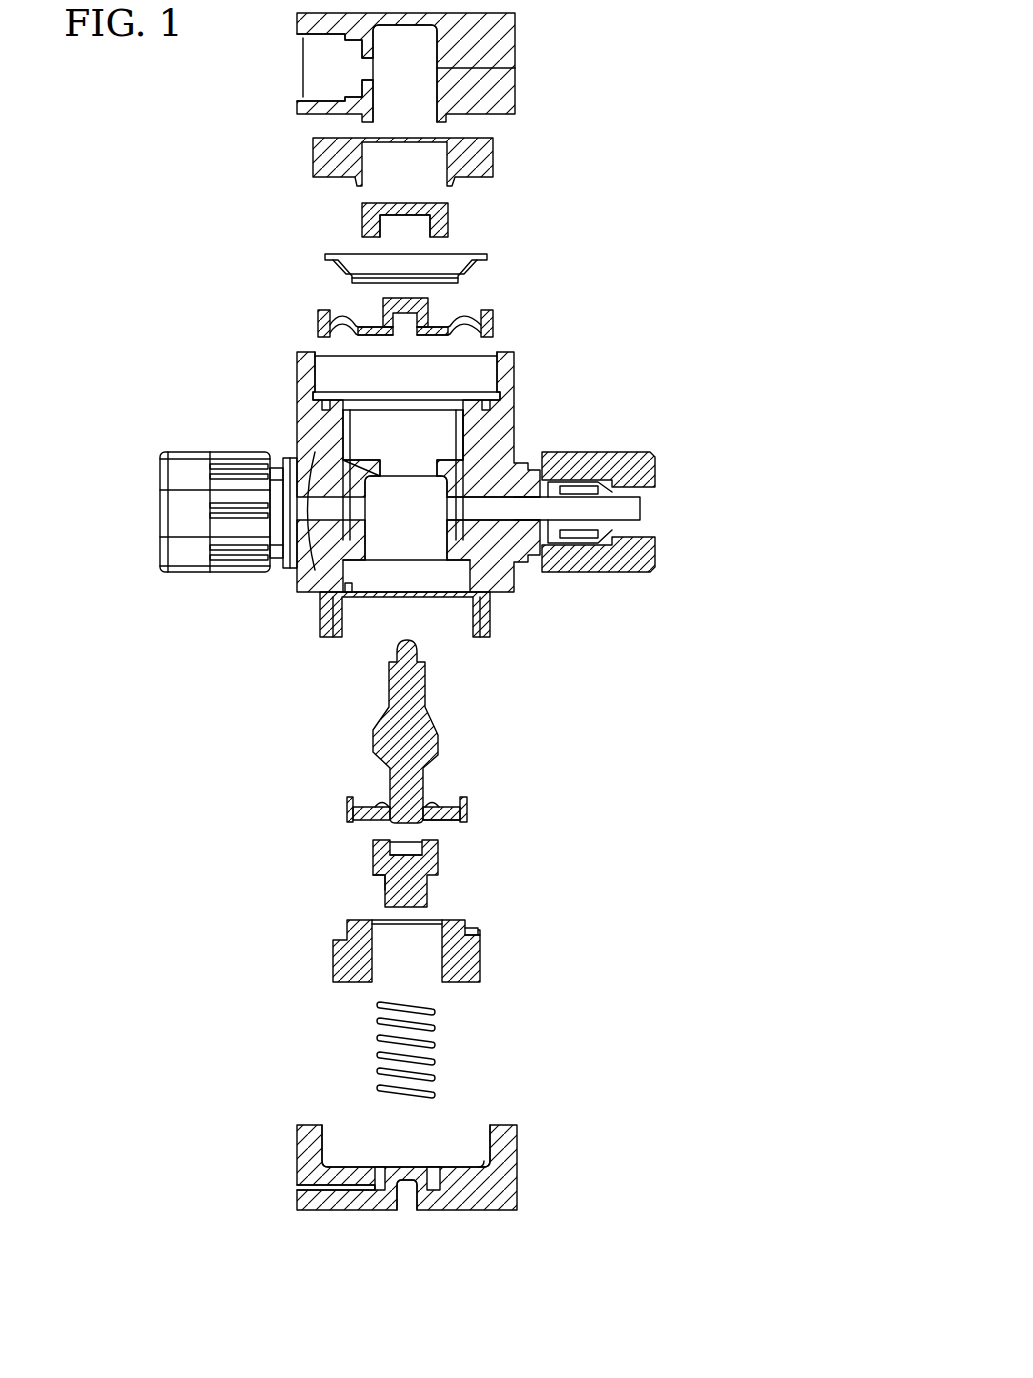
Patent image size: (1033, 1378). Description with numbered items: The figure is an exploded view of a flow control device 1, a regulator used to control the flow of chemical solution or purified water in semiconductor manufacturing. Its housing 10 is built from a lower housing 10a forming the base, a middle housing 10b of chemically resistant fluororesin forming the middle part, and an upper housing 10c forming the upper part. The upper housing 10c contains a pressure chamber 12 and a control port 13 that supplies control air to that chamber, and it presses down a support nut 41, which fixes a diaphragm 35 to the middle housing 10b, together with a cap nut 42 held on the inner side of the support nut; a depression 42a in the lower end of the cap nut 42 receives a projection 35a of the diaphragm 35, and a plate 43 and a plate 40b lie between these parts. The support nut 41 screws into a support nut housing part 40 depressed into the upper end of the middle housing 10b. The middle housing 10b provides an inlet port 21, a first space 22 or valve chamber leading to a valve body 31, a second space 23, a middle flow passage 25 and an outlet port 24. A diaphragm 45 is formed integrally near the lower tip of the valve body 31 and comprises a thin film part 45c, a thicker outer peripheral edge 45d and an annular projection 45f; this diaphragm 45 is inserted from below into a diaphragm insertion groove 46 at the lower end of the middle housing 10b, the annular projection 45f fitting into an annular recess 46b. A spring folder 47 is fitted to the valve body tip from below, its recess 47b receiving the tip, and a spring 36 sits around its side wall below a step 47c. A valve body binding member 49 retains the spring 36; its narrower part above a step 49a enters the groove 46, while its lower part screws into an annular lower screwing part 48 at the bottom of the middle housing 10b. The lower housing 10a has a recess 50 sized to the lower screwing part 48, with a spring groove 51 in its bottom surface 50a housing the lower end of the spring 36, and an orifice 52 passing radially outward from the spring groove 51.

The flow control device 1 is at (716, 110).
The housing 10 is at (419, 632).
The lower housing 10a is at (457, 1162).
The middle housing 10b is at (419, 493).
The upper housing 10c is at (447, 67).
The pressure chamber 12 is at (421, 87).
The control port 13 is at (300, 68).
The inlet port 21 is at (329, 512).
The first space 22 is at (423, 532).
The second space 23 is at (423, 453).
The outlet port 24 is at (495, 522).
The middle flow passage 25 is at (467, 443).
The valve body 31 is at (400, 690).
The diaphragm 35 is at (398, 304).
The projection 35a is at (385, 300).
The spring 36 is at (434, 1015).
The support nut housing part 40 is at (486, 352).
The plate 40b is at (500, 400).
The support nut 41 is at (494, 150).
The cap nut 42 is at (412, 221).
The depression 42a is at (395, 230).
The diaphragm plate 43 is at (470, 258).
The diaphragm 45 is at (420, 810).
The thin film part 45c is at (432, 806).
The outer peripheral edge 45d is at (455, 824).
The annular projection 45f is at (468, 800).
The diaphragm insertion groove 46 is at (450, 582).
The annular recess 46b is at (346, 590).
The spring folder 47 is at (415, 874).
The recess 47b is at (398, 848).
The step 47c is at (383, 880).
The lower screwing part 48 is at (323, 628).
The valve body binding member 49 is at (442, 940).
The step 49a is at (472, 937).
The recess 50 is at (468, 1137).
The bottom surface 50a is at (478, 1162).
The spring groove 51 is at (379, 1188).
The orifice 52 is at (297, 1187).